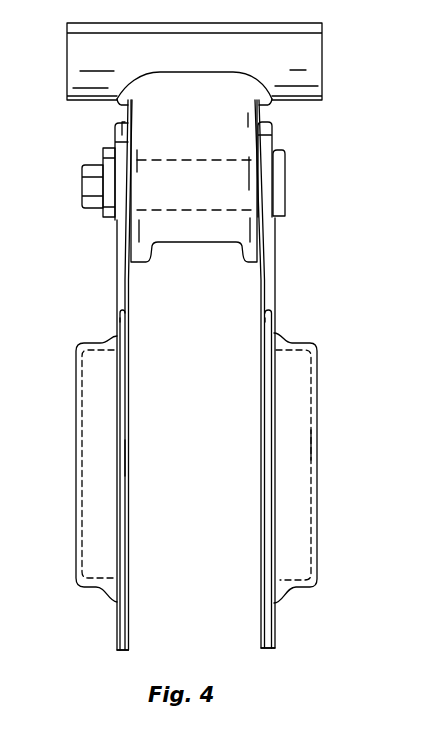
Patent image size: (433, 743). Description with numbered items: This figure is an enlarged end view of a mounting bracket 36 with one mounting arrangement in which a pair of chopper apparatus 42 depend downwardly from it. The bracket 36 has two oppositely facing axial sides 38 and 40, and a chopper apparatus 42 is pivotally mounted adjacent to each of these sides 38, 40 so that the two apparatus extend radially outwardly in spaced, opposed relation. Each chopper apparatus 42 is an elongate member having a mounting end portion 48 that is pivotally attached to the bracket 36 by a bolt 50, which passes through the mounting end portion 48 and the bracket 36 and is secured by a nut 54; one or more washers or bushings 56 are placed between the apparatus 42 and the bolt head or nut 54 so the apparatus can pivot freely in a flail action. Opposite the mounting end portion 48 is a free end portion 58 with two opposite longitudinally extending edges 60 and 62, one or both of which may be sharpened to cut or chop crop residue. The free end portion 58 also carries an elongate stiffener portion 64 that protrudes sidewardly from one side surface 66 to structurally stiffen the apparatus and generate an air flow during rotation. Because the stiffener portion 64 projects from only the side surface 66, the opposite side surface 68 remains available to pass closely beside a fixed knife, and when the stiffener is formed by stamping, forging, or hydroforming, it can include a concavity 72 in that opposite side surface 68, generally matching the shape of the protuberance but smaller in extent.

The bracket 36 is at (322, 45).
The axial side 38 is at (125, 116).
The axial side 40 is at (268, 104).
The chopper apparatus 42 is at (116, 285).
The mounting end portion 48 is at (120, 134).
The bolt 50 is at (287, 212).
The nut 54 is at (82, 193).
The washers or bushings 56 is at (118, 222).
The free end portion 58 is at (118, 623).
The longitudinally extending edge 60 is at (125, 458).
The longitudinally extending edge 62 is at (312, 447).
The stiffener portion 64 is at (77, 548).
The side surface 66 is at (119, 321).
The opposite side surface 68 is at (127, 343).
The concavity 72 is at (92, 525).